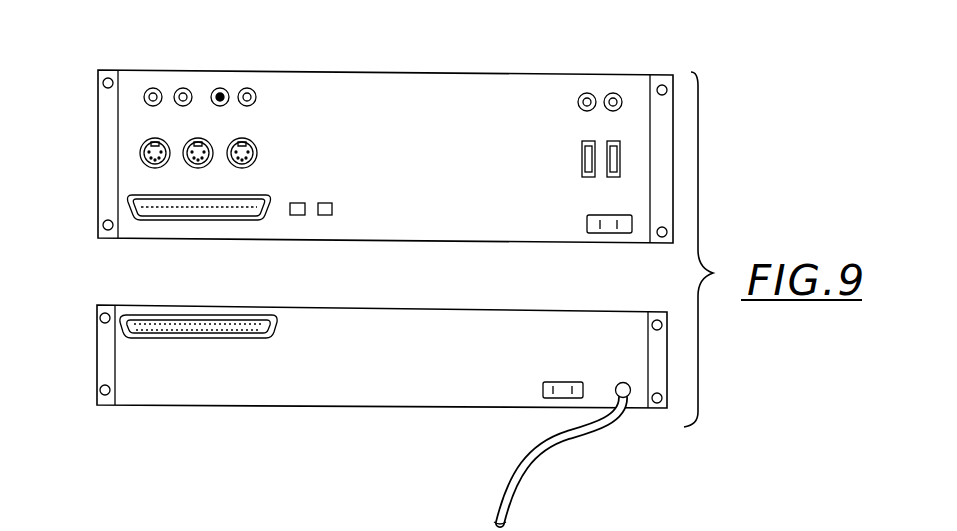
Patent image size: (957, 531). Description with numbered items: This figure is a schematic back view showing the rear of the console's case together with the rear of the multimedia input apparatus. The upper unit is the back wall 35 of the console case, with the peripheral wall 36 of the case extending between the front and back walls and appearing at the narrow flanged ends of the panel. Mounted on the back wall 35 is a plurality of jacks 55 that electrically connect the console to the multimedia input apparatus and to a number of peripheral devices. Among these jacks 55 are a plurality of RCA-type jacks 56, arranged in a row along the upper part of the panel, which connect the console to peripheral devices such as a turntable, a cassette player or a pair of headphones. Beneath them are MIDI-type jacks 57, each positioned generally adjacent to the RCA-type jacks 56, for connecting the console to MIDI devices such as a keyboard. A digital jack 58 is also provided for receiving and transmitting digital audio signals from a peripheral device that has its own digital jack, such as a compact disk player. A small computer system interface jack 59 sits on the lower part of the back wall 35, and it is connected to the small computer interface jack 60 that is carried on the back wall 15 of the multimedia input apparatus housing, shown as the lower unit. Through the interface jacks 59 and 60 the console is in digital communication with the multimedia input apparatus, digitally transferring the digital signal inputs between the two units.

The back wall 15 is at (208, 392).
The back wall 35 is at (435, 88).
The peripheral wall 36 is at (98, 100).
The plurality of jacks 55 is at (132, 199).
The RCA-type jacks 56 is at (246, 88).
The MIDI-type jacks 57 is at (254, 139).
The digital jack 58 is at (320, 217).
The small computer system interface jack 59 is at (177, 210).
The small computer interface jack 60 is at (115, 340).